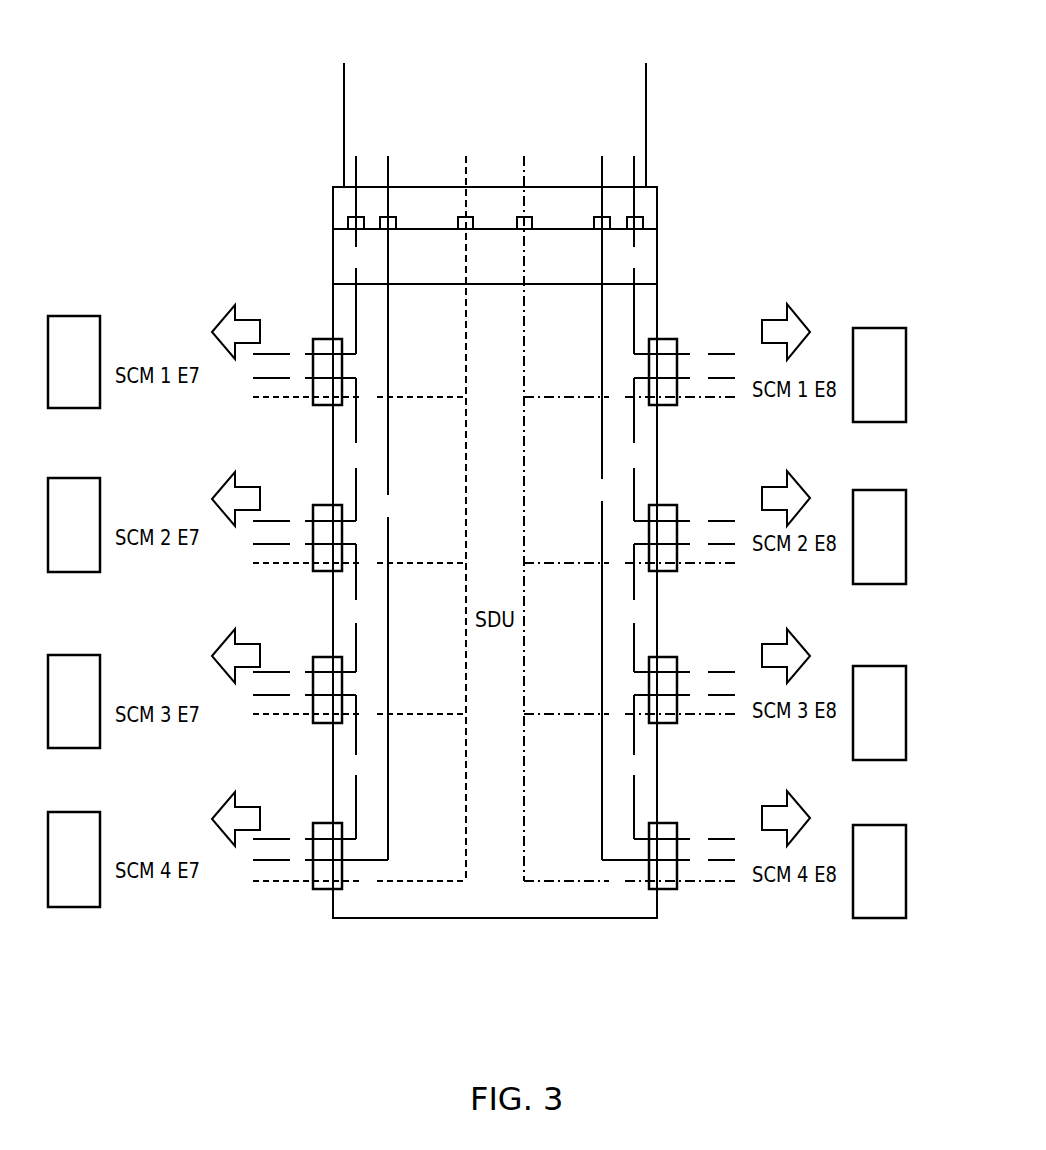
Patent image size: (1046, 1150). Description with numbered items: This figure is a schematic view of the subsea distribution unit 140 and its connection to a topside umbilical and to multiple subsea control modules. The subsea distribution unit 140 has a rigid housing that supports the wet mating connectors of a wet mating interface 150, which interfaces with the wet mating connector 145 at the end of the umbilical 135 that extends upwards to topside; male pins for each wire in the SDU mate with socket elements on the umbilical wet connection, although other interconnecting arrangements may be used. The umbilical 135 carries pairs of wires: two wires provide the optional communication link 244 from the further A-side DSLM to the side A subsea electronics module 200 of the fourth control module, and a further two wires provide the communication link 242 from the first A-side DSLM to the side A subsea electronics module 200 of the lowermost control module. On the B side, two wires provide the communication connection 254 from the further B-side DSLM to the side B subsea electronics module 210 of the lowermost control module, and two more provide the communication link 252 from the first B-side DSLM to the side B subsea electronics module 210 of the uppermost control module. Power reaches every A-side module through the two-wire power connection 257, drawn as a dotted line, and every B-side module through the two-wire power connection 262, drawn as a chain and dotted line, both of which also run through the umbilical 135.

The umbilical 135 is at (610, 73).
The subsea distribution unit 140 is at (516, 905).
The wet mating connector 145 is at (333, 203).
The wet mating interface 150 is at (333, 260).
The communication link 242 is at (388, 342).
The communication link 244 is at (356, 318).
The communication link 252 is at (637, 323).
The communication connection 254 is at (602, 342).
The power connection 257 is at (466, 788).
The power connection 262 is at (524, 785).
The side A subsea electronics module 200 is at (82, 400).
The side B subsea electronics module 210 is at (885, 413).